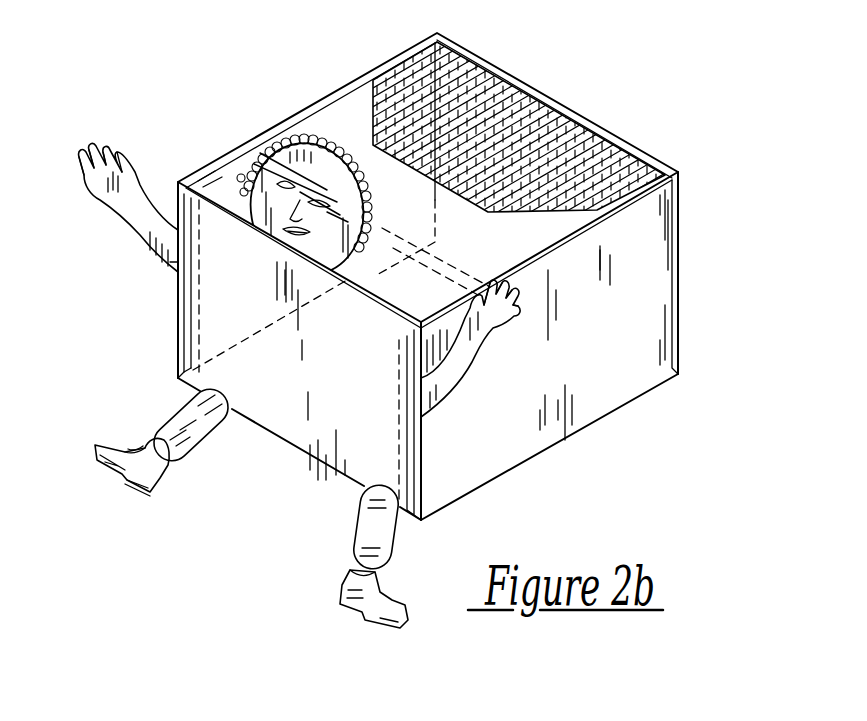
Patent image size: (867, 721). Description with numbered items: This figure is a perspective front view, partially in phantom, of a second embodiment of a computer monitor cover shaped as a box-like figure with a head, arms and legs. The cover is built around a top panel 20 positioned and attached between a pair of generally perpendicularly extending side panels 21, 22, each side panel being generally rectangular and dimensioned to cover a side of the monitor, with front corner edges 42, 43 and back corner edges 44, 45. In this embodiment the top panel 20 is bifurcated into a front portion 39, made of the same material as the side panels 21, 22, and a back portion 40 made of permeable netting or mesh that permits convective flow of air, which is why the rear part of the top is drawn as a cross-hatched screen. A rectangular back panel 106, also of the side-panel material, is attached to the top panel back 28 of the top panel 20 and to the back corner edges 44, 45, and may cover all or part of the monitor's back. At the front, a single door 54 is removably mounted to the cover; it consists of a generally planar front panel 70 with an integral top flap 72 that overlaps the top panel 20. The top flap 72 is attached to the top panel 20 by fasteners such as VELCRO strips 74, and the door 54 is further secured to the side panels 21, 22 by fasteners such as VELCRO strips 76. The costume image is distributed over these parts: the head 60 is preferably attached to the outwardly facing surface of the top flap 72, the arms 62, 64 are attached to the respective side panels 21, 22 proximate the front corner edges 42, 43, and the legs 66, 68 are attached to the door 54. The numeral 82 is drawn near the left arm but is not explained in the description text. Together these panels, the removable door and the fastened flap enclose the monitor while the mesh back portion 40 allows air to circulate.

The top panel 20 is at (317, 113).
The side panel 21 is at (178, 317).
The side panel 22 is at (466, 366).
The top panel back 28 is at (660, 168).
The front portion 39 is at (495, 228).
The back portion 40 is at (420, 80).
The front corner edge 42 is at (172, 347).
The front corner edge 43 is at (421, 476).
The back corner edge 44 is at (433, 190).
The back corner edge 45 is at (680, 300).
The door 54 is at (330, 457).
The head 60 is at (258, 132).
The arm 62 is at (132, 212).
The arm 64 is at (421, 432).
The leg 66 is at (177, 455).
The leg 68 is at (390, 557).
The front panel 70 is at (314, 370).
The top flap 72 is at (217, 172).
The VELCRO strips 74 is at (500, 284).
The VELCRO strips 76 is at (173, 365).
The arm opening 82 is at (170, 267).
The back panel 106 is at (687, 250).